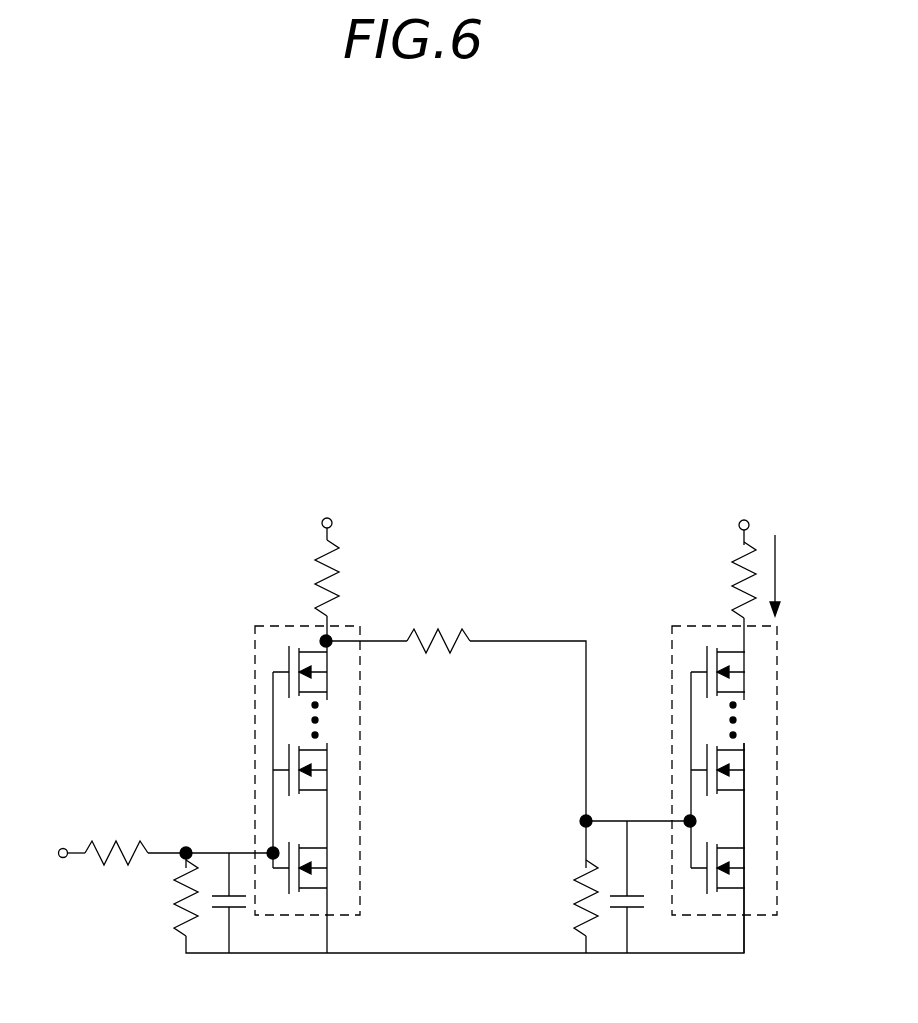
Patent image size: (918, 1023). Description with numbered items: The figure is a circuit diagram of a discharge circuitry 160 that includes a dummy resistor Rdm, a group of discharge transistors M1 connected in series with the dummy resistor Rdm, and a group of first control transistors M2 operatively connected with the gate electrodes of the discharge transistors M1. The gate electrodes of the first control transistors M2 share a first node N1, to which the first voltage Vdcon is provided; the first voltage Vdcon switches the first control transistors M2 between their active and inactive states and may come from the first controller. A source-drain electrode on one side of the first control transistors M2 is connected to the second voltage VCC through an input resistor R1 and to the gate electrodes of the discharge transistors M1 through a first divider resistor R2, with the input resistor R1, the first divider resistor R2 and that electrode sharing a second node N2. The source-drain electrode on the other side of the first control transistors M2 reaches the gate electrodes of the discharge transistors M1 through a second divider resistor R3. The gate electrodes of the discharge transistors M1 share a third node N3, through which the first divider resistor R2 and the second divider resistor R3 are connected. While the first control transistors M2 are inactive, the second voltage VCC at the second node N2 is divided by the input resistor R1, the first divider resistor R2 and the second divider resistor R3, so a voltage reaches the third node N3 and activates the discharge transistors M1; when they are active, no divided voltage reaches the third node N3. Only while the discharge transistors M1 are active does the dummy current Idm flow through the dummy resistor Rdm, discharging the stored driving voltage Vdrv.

The discharge circuitry 160 is at (737, 470).
The group of discharge transistors M1 is at (777, 770).
The group of first control transistors M2 is at (360, 770).
The input resistor R1 is at (312, 590).
The first divider resistor R2 is at (496, 709).
The second divider resistor R3 is at (571, 878).
The dummy resistor Rdm is at (714, 597).
The first node N1 is at (186, 849).
The second node N2 is at (327, 639).
The third node N3 is at (583, 822).
The second voltage VCC is at (325, 517).
The driving voltage Vdrv is at (744, 520).
The first voltage Vdcon is at (149, 867).
The dummy current Idm is at (796, 575).